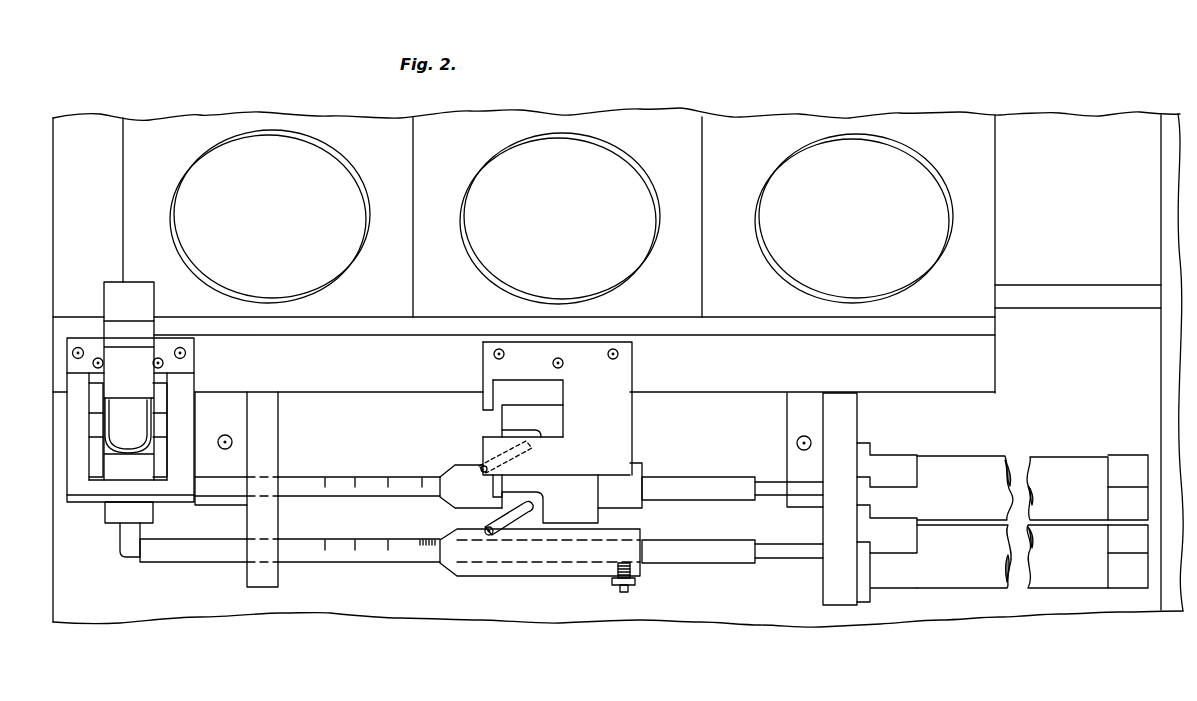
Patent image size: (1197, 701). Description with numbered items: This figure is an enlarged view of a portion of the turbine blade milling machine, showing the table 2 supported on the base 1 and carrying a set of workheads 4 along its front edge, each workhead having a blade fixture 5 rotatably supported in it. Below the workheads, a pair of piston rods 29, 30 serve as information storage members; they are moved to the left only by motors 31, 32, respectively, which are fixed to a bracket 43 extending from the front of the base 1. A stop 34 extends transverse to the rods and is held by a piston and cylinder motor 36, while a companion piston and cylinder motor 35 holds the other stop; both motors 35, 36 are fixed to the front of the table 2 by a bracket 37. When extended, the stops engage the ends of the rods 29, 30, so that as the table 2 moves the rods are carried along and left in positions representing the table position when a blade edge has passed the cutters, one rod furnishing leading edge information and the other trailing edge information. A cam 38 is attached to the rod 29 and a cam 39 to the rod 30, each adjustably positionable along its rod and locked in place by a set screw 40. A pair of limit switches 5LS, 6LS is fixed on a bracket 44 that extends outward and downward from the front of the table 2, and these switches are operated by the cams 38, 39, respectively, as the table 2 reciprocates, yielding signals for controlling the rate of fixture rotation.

The base 1 is at (1070, 436).
The table 2 is at (832, 374).
The workheads 4 is at (712, 118).
The blade fixture 5 is at (368, 231).
The piston rod 29 is at (713, 480).
The piston rod 30 is at (723, 542).
The motor 31 is at (961, 498).
The motor 32 is at (961, 565).
The stop 34 is at (143, 532).
The piston and cylinder motor 35 is at (104, 293).
The piston and cylinder motor 36 is at (140, 448).
The bracket 37 is at (195, 382).
The cam 38 is at (642, 463).
The cam 39 is at (640, 531).
The set screw 40 is at (622, 588).
The bracket 43 is at (857, 428).
The bracket 44 is at (632, 368).
The limit switch 5LS is at (500, 456).
The limit switch 6LS is at (497, 523).